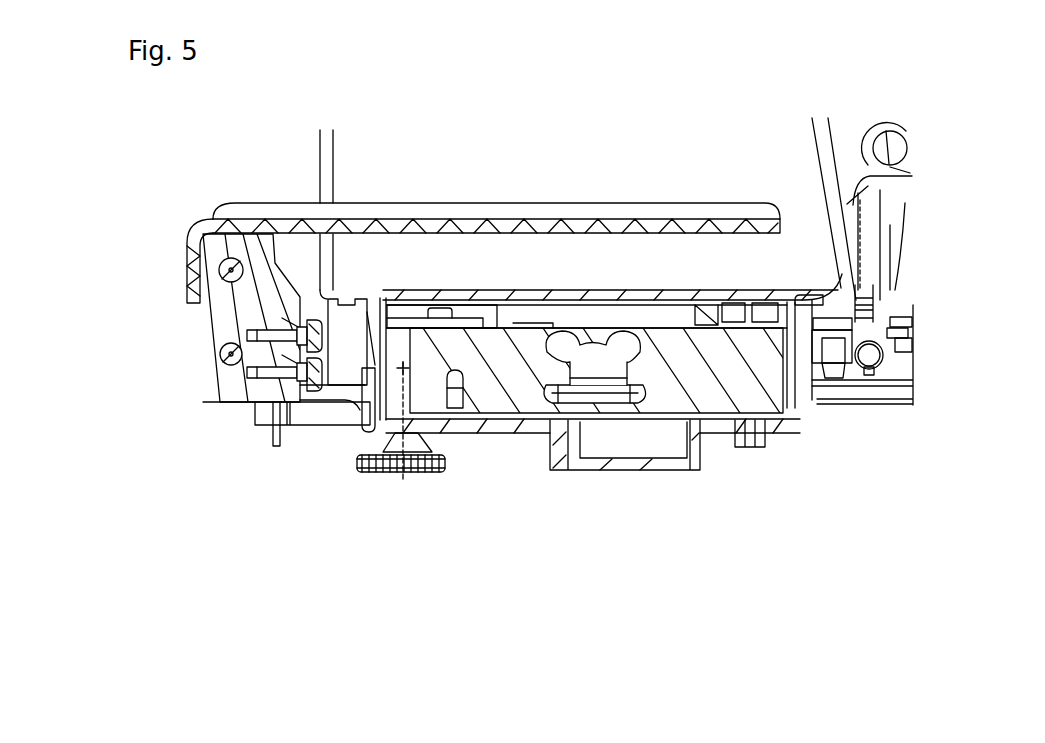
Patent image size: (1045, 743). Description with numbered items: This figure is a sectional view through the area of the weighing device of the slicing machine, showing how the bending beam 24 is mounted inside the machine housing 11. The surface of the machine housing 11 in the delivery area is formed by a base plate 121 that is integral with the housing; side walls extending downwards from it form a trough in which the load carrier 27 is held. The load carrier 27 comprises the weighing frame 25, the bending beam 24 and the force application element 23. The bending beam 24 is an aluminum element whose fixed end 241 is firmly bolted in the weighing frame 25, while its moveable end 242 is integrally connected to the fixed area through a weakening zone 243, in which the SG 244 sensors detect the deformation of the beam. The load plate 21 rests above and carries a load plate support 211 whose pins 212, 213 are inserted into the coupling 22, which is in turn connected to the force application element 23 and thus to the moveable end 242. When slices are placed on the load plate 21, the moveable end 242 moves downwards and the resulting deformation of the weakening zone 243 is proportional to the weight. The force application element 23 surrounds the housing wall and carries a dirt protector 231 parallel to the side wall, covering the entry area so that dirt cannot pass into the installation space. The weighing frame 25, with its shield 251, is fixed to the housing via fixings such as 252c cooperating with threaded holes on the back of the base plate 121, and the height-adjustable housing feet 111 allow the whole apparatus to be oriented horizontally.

The machine housing 11 is at (841, 202).
The load plate 21 is at (258, 200).
The coupling apparatus 22 is at (215, 306).
The force application element 23 is at (261, 410).
The bending beam 24 is at (692, 395).
The weighing frame 25 is at (366, 428).
The load carrier 27 is at (599, 522).
The housing feet 111 is at (413, 475).
The base plate 121 is at (656, 284).
The load plate support 211 is at (220, 347).
The pins 212 is at (219, 272).
The pins 213 is at (225, 366).
The dirt protector 231 is at (287, 432).
The fixed end 241 is at (775, 398).
The moveable end 242 is at (423, 403).
The weakening zone 243 is at (560, 380).
The SG 244 is at (570, 325).
The shield 251 is at (437, 307).
The fixing 252c is at (847, 344).